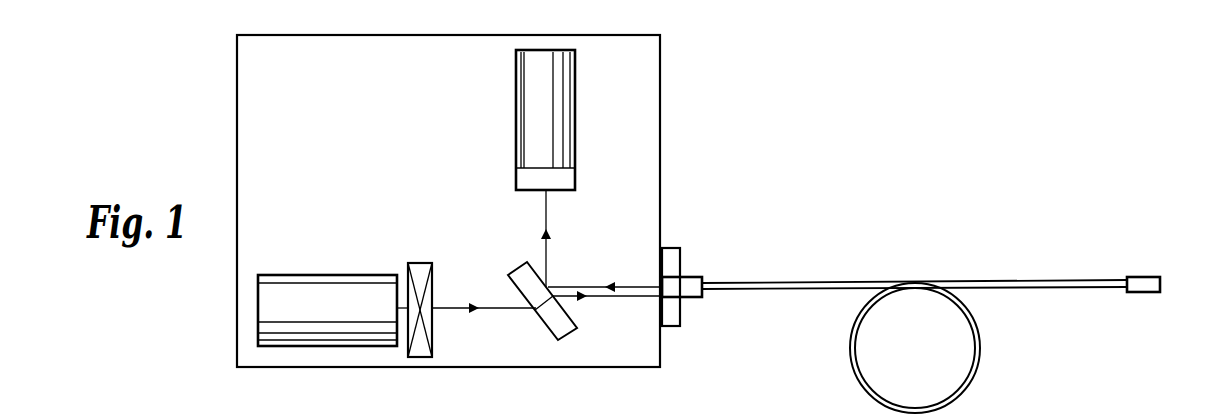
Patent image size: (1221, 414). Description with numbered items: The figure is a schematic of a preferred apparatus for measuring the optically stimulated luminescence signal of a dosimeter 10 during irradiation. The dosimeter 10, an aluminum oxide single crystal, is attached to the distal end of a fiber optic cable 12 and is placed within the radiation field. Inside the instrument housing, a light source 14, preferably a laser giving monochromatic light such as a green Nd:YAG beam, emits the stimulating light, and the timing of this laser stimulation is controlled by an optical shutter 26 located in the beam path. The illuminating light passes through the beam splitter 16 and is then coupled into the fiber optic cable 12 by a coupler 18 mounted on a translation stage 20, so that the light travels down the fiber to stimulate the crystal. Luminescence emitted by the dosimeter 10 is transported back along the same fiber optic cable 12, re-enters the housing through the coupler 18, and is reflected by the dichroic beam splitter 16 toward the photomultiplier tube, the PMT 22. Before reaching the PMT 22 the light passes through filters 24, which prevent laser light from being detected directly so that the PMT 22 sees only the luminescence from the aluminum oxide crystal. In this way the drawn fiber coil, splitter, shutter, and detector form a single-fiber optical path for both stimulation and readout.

The dosimeter 10 is at (1152, 280).
The fiber optic cable 12 is at (925, 285).
The light source 14 is at (307, 296).
The beam splitter 16 is at (563, 323).
The coupler 18 is at (690, 288).
The translation stage 20 is at (670, 317).
The PMT 22 is at (528, 118).
The filters 24 is at (530, 178).
The optical shutter 26 is at (432, 263).